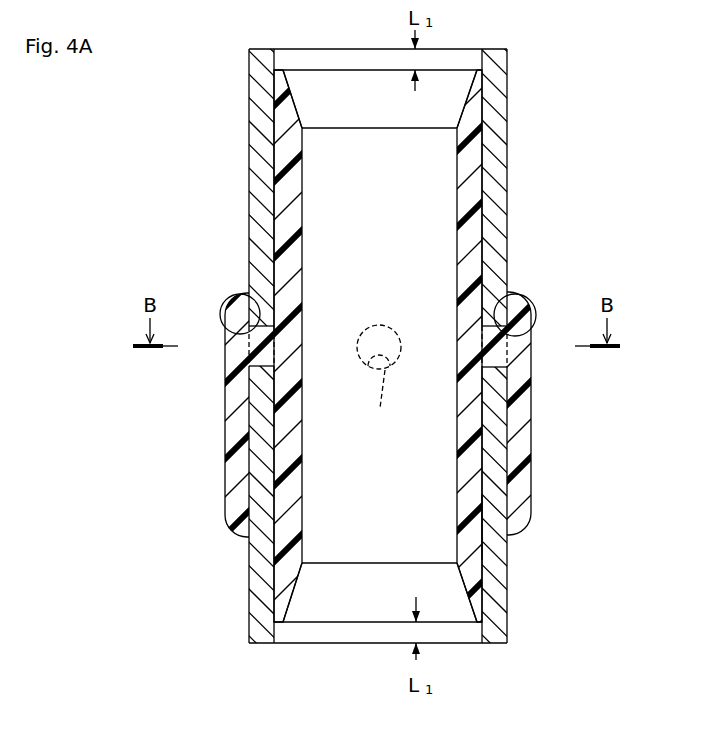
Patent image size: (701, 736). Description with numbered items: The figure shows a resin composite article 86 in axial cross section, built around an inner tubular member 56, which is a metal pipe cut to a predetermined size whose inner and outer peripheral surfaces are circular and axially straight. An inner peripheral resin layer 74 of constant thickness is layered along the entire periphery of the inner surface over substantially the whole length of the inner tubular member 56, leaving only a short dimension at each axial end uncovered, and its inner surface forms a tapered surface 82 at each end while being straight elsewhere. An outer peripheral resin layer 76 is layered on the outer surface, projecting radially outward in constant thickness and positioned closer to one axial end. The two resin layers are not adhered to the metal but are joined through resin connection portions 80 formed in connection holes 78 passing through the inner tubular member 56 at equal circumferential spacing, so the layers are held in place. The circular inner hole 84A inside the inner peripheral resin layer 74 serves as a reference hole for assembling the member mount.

The resin composite article 86 is at (566, 66).
The inner tubular member 56 is at (510, 175).
The inner peripheral resin layer 74 is at (290, 258).
The tapered surface 82 is at (296, 100).
The outer peripheral resin layer 76 is at (518, 411).
The connection hole 78 is at (248, 336).
The resin connection portion 80 is at (262, 355).
The inner hole 84A is at (460, 512).